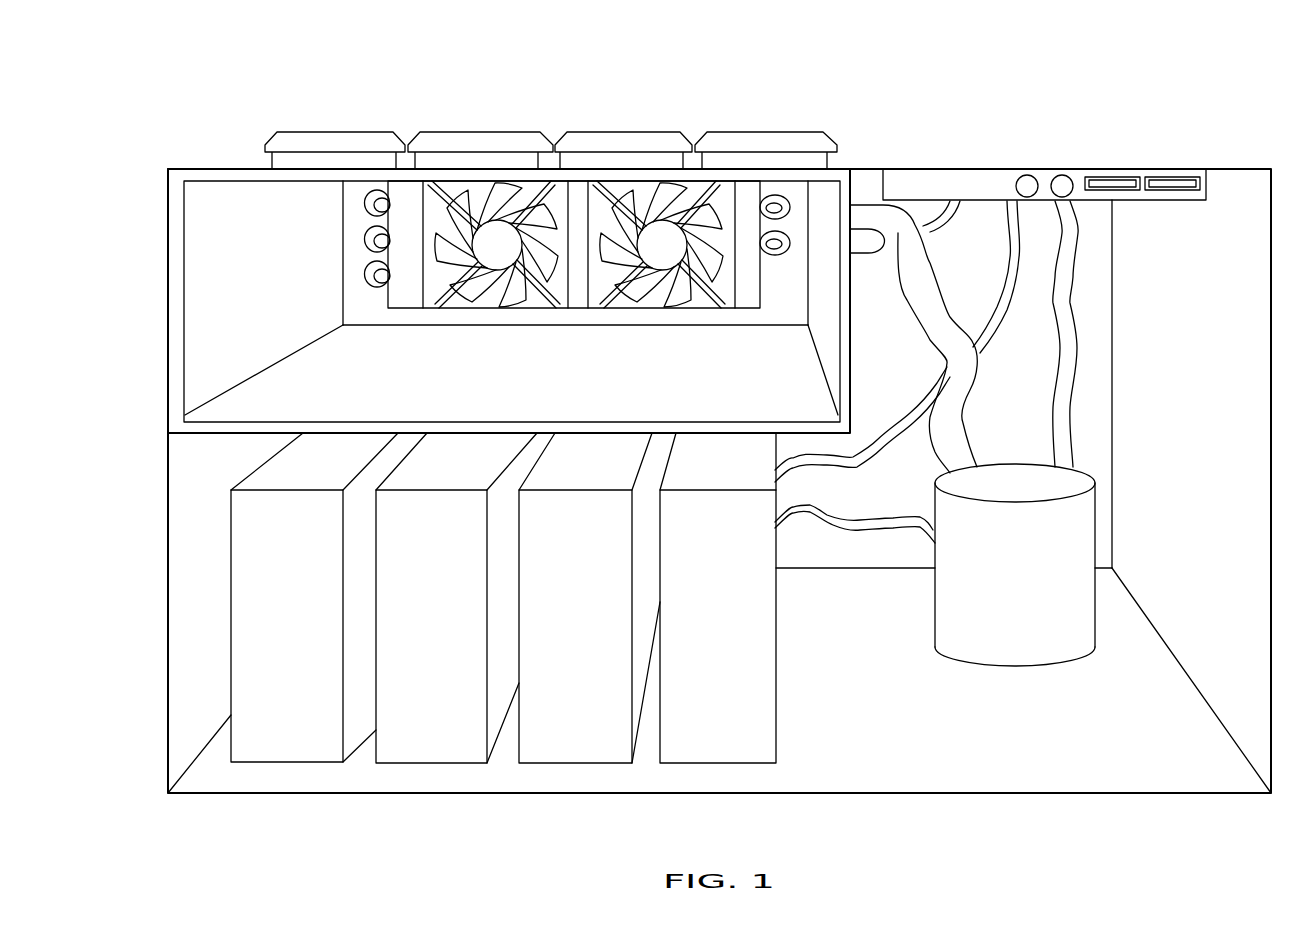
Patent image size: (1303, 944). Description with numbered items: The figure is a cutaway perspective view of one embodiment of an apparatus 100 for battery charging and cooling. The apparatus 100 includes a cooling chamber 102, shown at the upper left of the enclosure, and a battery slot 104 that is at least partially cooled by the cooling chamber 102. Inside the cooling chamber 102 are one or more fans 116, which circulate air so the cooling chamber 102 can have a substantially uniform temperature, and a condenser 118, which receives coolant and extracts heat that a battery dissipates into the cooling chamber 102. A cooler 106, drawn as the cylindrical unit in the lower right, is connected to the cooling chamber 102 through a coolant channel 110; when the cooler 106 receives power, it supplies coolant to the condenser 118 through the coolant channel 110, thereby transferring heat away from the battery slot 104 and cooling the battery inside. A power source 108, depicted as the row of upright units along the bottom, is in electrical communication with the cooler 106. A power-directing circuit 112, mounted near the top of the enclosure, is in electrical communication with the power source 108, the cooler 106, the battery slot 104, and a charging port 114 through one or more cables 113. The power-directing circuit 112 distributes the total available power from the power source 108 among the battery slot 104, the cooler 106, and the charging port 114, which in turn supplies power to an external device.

The apparatus 100 is at (190, 66).
The cooling chamber 102 is at (287, 284).
The battery slot 104 is at (472, 98).
The cooler 106 is at (1127, 515).
The power source 108 is at (803, 707).
The coolant channel 110 is at (960, 402).
The power-directing circuit 112 is at (971, 183).
The cables 113 is at (1118, 312).
The charging port 114 is at (1128, 155).
The fan 116 is at (495, 292).
The condenser 118 is at (374, 292).